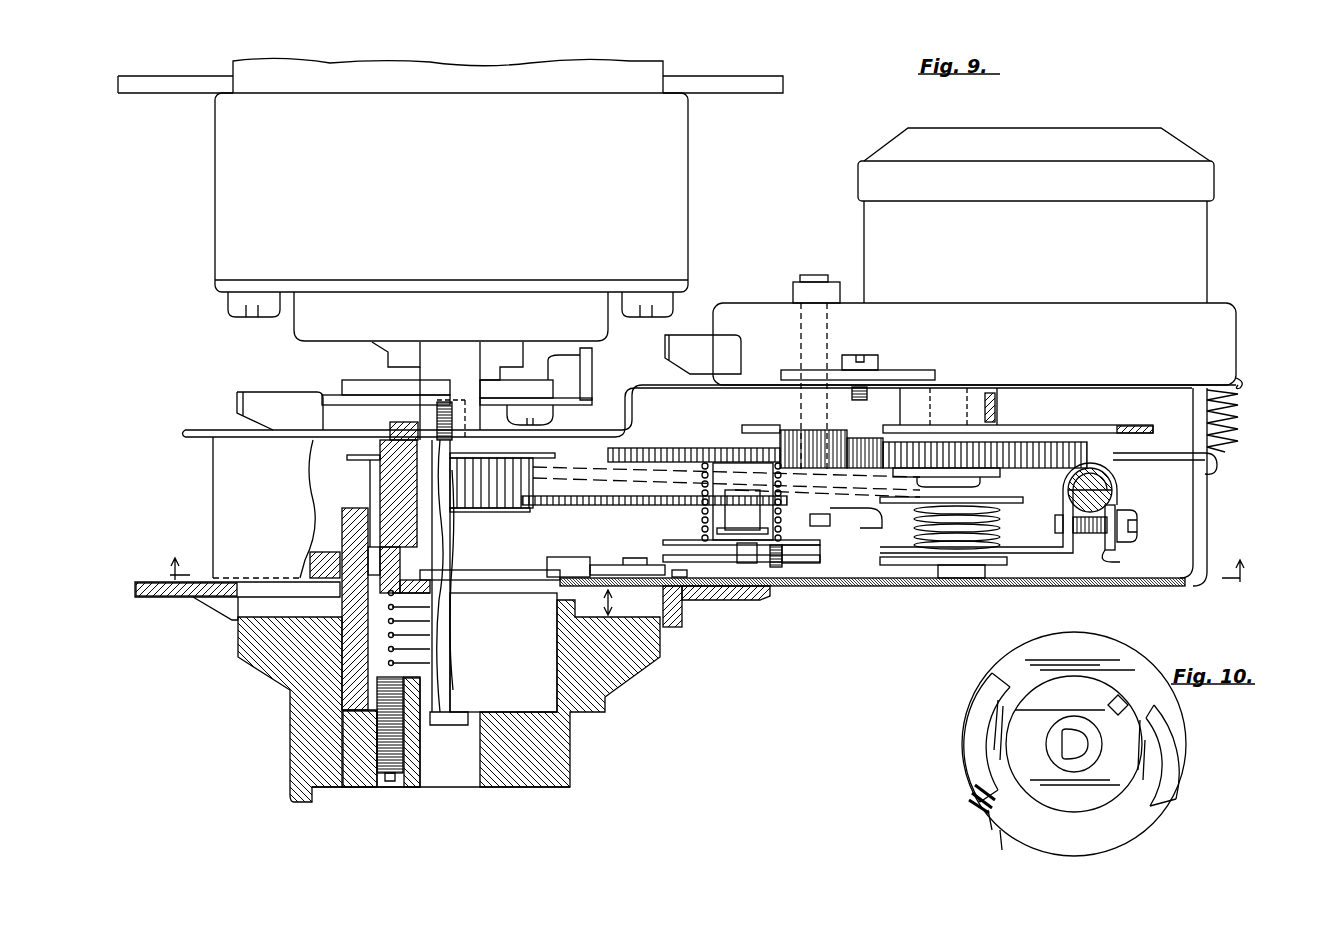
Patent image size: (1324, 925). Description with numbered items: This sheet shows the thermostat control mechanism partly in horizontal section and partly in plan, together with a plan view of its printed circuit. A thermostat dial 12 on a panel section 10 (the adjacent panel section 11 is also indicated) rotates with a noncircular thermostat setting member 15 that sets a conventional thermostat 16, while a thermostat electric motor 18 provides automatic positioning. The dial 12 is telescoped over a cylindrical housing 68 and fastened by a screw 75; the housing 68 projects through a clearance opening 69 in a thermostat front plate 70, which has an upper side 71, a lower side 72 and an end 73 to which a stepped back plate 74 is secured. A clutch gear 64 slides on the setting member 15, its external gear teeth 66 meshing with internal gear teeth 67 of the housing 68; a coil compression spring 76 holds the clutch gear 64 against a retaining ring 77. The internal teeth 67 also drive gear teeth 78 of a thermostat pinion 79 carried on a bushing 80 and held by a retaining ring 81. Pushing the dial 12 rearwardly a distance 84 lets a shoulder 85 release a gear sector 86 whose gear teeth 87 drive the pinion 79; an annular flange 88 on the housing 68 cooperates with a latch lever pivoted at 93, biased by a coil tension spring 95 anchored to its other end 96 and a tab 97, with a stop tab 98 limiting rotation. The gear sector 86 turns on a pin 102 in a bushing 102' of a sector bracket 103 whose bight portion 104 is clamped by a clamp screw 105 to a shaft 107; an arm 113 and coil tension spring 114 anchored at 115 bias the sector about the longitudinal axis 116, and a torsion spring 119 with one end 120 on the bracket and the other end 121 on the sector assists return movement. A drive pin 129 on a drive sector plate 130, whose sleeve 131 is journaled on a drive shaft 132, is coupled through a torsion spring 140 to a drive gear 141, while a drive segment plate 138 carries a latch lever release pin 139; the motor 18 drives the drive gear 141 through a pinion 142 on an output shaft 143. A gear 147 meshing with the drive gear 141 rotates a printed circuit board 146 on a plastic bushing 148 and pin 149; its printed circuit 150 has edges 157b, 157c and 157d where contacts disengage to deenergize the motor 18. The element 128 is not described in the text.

In FIG. 9, the panel section 10 is at (735, 592).
In FIG. 9, the panel section 11 is at (717, 559).
In FIG. 9, the thermostat dial 12 is at (595, 765).
In FIG. 9, the thermostat setting member 15 is at (440, 718).
In FIG. 9, the thermostat 16 is at (195, 190).
In FIG. 9, the thermostat electric motor 18 is at (1185, 130).
In FIG. 9, the clutch gear 64 is at (430, 582).
In FIG. 9, the external gear teeth 66 is at (342, 628).
In FIG. 9, the internal gear teeth 67 is at (372, 535).
In FIG. 9, the cylindrical housing 68 is at (342, 690).
In FIG. 9, the clearance opening 69 is at (560, 600).
In FIG. 9, the thermostat front plate 70 is at (1040, 588).
In FIG. 9, the upper side 71 is at (213, 522).
In FIG. 9, the lower side 72 is at (1195, 560).
In FIG. 9, the end 73 is at (1210, 508).
In FIG. 9, the stepped back plate 74 is at (1046, 380).
In FIG. 9, the screw 75 is at (378, 790).
In FIG. 9, the coil compression spring 76 is at (340, 675).
In FIG. 9, the retaining ring 77 is at (445, 570).
In FIG. 9, the gear teeth 78 is at (378, 490).
In FIG. 9, the thermostat pinion 79 is at (385, 498).
In FIG. 9, the bushing 80 is at (380, 473).
In FIG. 9, the retaining ring 81 is at (395, 548).
In FIG. 9, the distance 84 is at (615, 623).
In FIG. 9, the shoulder 85 is at (603, 505).
In FIG. 9, the gear sector 86 is at (598, 468).
In FIG. 9, the gear teeth 87 is at (618, 505).
In FIG. 9, the annular flange 88 is at (300, 560).
In FIG. 9, the pivot 93 is at (590, 568).
In FIG. 9, the coil tension spring 95 is at (780, 570).
In FIG. 9, the other end 96 is at (755, 592).
In FIG. 9, the tab 97 is at (672, 577).
In FIG. 9, the stop tab 98 is at (682, 577).
In FIG. 9, the pin 102 is at (967, 590).
In FIG. 9, the bushing 102' is at (969, 545).
In FIG. 9, the sector bracket 103 is at (1050, 562).
In FIG. 9, the bight portion 104 is at (1118, 478).
In FIG. 9, the clamp screw 105 is at (1095, 540).
In FIG. 9, the shaft 107 is at (1138, 512).
In FIG. 9, the arm 113 is at (1222, 463).
In FIG. 9, the coil tension spring 114 is at (1240, 420).
In FIG. 9, the anchor 115 is at (1243, 378).
In FIG. 9, the longitudinal axis 116 is at (1112, 492).
In FIG. 9, the torsion spring 119 is at (1002, 533).
In FIG. 9, the one end 120 is at (1045, 500).
In FIG. 9, the other end 121 is at (828, 520).
In FIG. 9, the lever 128 is at (878, 512).
In FIG. 9, the drive pin 129 is at (735, 522).
In FIG. 9, the drive sector plate 130 is at (815, 556).
In FIG. 9, the sleeve 131 is at (725, 465).
In FIG. 9, the drive shaft 132 is at (714, 408).
In FIG. 9, the drive segment plate 138 is at (810, 567).
In FIG. 9, the latch lever release pin 139 is at (786, 562).
In FIG. 9, the torsion spring 140 is at (702, 520).
In FIG. 9, the drive gear 141 is at (655, 448).
In FIG. 9, the pinion 142 is at (832, 440).
In FIG. 9, the output shaft 143 is at (800, 276).
In FIG. 9, the printed circuit board 146 is at (1075, 430).
In FIG. 10, the printed circuit board 146 is at (1183, 782).
In FIG. 9, the gear 147 is at (1036, 442).
In FIG. 9, the plastic bushing 148 is at (989, 392).
In FIG. 9, the pin 149 is at (948, 390).
In FIG. 10, the printed circuit 150 is at (1120, 662).
In FIG. 10, the edge 157b is at (1110, 700).
In FIG. 10, the edge 157c is at (1150, 715).
In FIG. 10, the edge 157d is at (1165, 807).